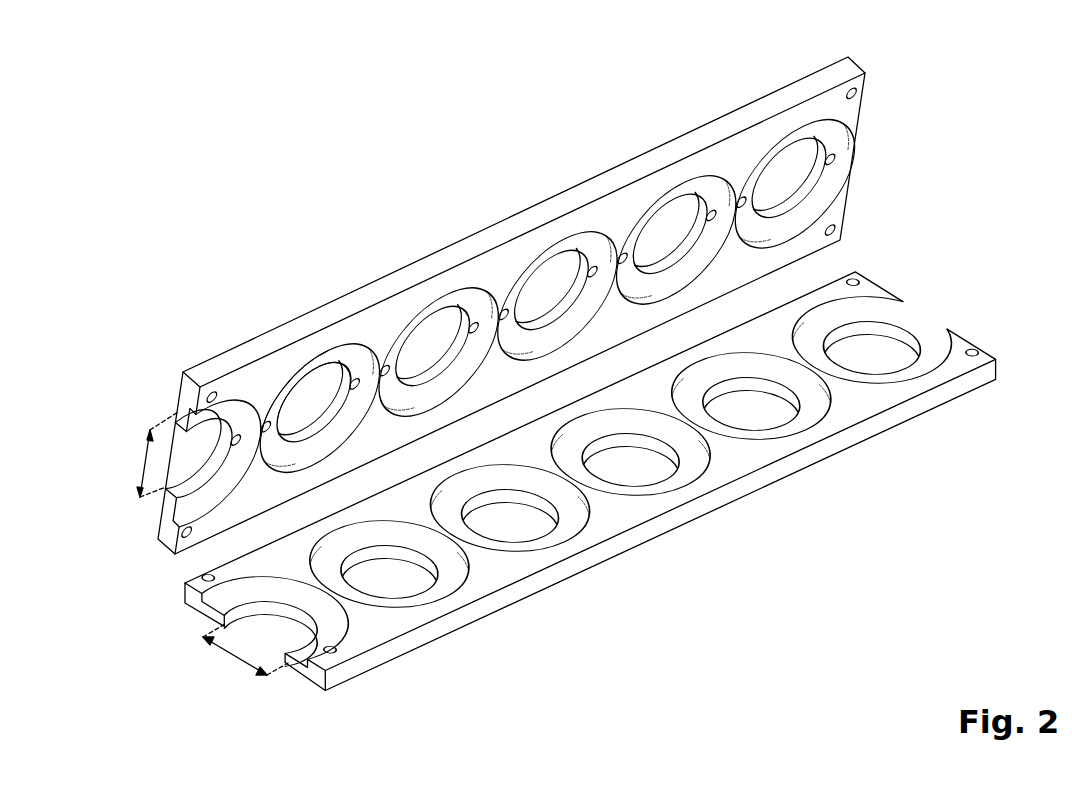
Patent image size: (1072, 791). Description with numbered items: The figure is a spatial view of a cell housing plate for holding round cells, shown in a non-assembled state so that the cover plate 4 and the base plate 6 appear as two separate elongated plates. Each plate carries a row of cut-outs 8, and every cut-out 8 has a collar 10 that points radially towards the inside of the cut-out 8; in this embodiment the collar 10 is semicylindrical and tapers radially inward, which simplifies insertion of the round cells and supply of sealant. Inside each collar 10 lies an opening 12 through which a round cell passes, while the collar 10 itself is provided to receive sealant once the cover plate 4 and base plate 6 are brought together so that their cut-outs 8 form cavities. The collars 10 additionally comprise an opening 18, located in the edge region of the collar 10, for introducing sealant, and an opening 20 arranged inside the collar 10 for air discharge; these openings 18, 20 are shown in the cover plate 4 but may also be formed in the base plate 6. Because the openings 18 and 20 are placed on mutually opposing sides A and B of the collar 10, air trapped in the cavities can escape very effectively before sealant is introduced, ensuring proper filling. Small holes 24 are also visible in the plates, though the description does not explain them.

The cover plate 4 is at (540, 221).
The base plate 6 is at (642, 548).
The cut-out 8 is at (432, 332).
The collar 10 is at (177, 512).
The opening 12 is at (146, 463).
The opening for introduction of a sealant 18 is at (282, 404).
The opening for air discharge 20 is at (341, 392).
The fastening hole 24 is at (860, 92).
The side of the collar A is at (304, 396).
The side of the collar B is at (322, 398).